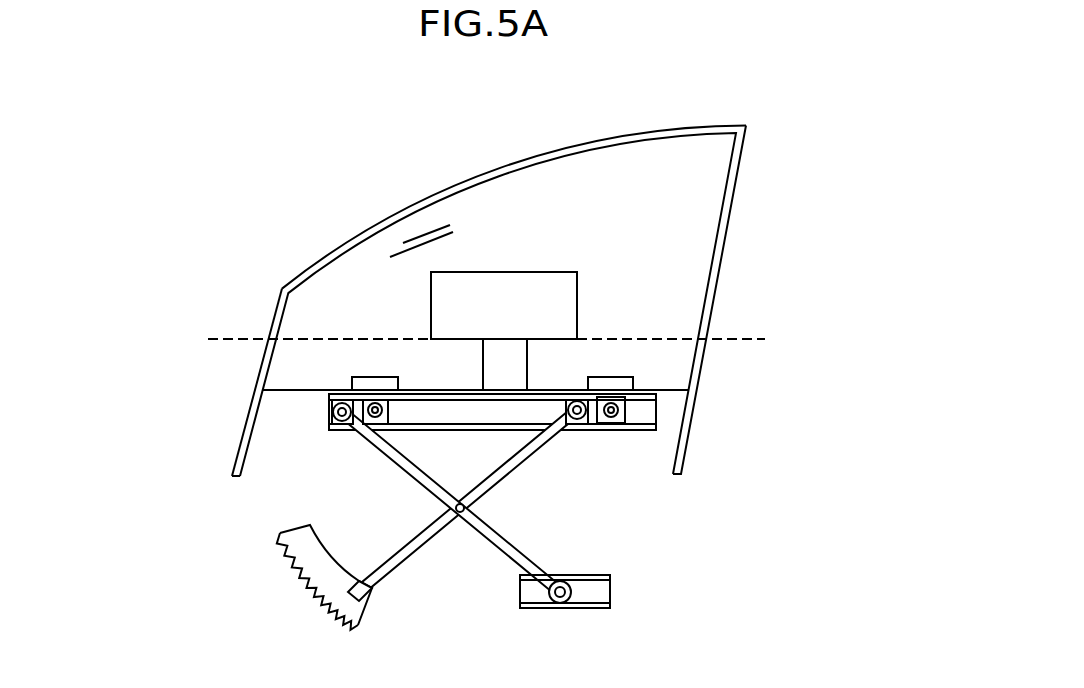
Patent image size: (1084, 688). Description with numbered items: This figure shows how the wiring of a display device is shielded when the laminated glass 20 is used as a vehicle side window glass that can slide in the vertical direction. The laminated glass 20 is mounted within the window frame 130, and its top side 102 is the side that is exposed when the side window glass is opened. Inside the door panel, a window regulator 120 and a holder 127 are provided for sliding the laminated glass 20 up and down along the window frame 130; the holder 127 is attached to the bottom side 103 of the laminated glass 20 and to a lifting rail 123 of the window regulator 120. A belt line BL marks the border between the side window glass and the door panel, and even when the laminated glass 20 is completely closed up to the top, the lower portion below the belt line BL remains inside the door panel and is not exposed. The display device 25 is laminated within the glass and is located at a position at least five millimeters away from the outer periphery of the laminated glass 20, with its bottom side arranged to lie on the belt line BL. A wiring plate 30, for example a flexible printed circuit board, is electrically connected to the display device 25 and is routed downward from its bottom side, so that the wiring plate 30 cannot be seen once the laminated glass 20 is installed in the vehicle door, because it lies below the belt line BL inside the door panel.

The laminated glass 20 is at (692, 260).
The window frame 130 is at (357, 238).
The top side 102 is at (478, 188).
The belt line BL is at (722, 340).
The display device 25 is at (507, 279).
The wiring plate 30 is at (523, 360).
The bottom side 103 is at (286, 384).
The lifting rail 123 is at (645, 410).
The holder 127 is at (363, 383).
The window regulator 120 is at (630, 520).